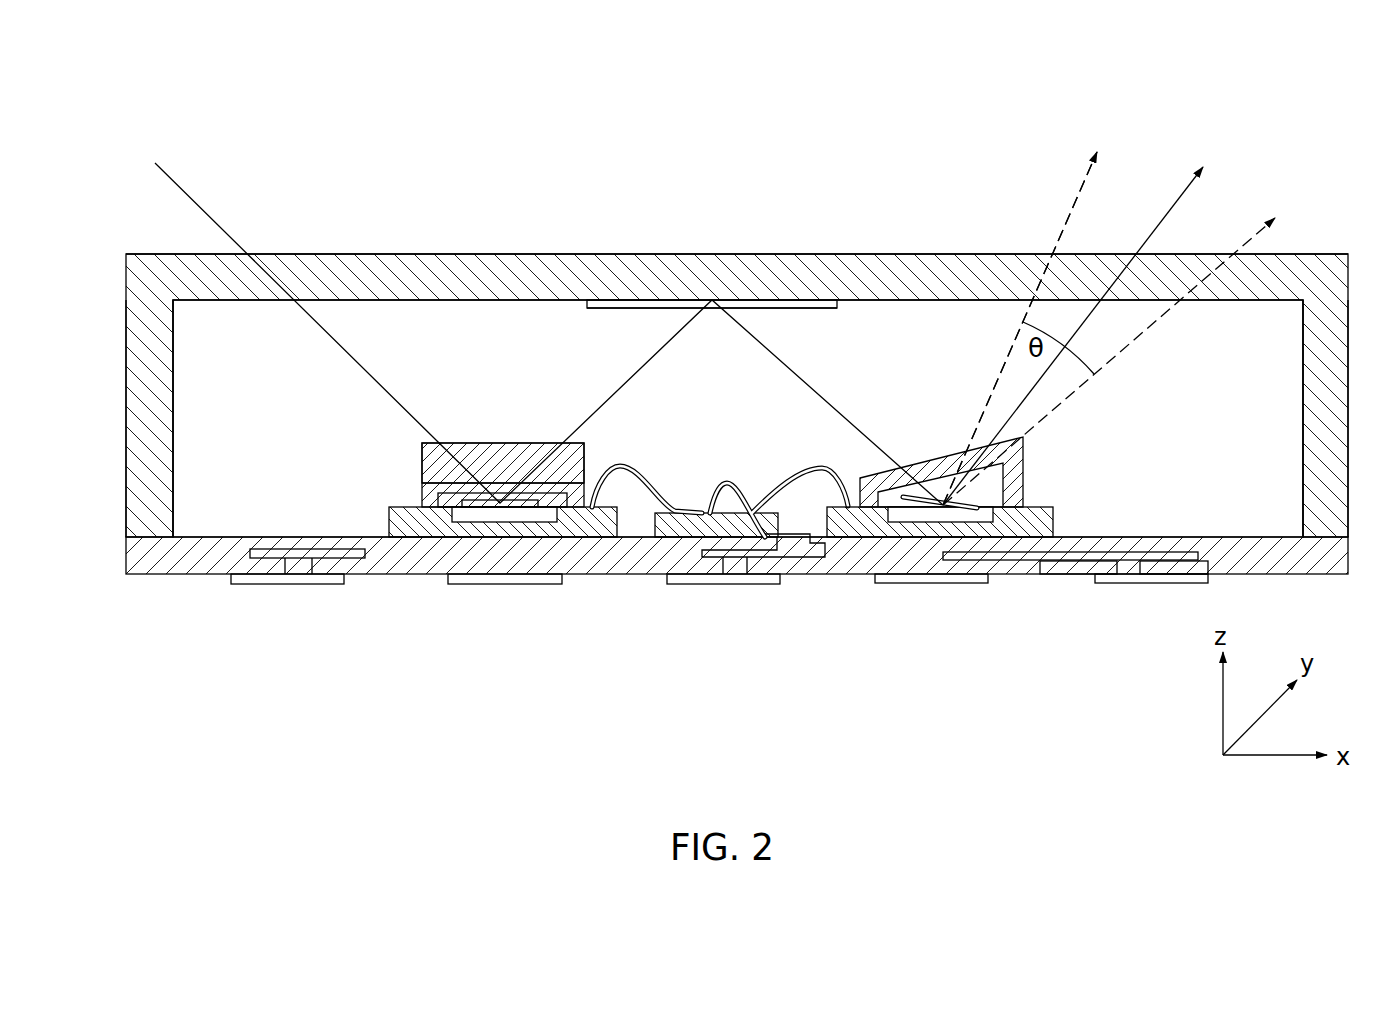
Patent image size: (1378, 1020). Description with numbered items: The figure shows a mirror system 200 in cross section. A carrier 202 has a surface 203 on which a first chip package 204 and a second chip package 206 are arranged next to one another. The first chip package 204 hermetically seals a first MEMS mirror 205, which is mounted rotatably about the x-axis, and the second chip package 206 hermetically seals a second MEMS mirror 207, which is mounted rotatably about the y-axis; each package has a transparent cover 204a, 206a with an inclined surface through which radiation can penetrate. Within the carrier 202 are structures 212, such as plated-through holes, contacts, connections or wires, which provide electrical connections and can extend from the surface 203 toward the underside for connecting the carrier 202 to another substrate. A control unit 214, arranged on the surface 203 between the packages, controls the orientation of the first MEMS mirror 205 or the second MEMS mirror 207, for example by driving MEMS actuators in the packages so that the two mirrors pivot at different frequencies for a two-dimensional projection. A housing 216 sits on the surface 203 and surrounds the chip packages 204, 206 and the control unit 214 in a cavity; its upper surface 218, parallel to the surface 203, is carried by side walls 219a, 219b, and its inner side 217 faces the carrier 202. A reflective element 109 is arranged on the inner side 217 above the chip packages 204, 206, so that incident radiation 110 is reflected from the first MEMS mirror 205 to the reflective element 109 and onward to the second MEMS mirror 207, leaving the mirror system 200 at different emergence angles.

The mirror system 200 is at (1152, 94).
The incident radiation 110 is at (193, 200).
The upper surface 218 is at (93, 255).
The housing 216 is at (457, 254).
The inner side 217 is at (552, 300).
The reflective element 109 is at (755, 305).
The side wall 219a is at (128, 412).
The side wall 219b is at (1312, 434).
The surface 203 is at (208, 537).
The carrier 202 is at (172, 563).
The structures 212 is at (737, 584).
The first chip package 204 is at (472, 442).
The first MEMS mirror 205 is at (430, 470).
The transparent cover 204a is at (425, 497).
The control unit 214 is at (692, 492).
The second chip package 206 is at (972, 442).
The transparent cover 206a is at (1008, 500).
The second MEMS mirror 207 is at (1002, 492).